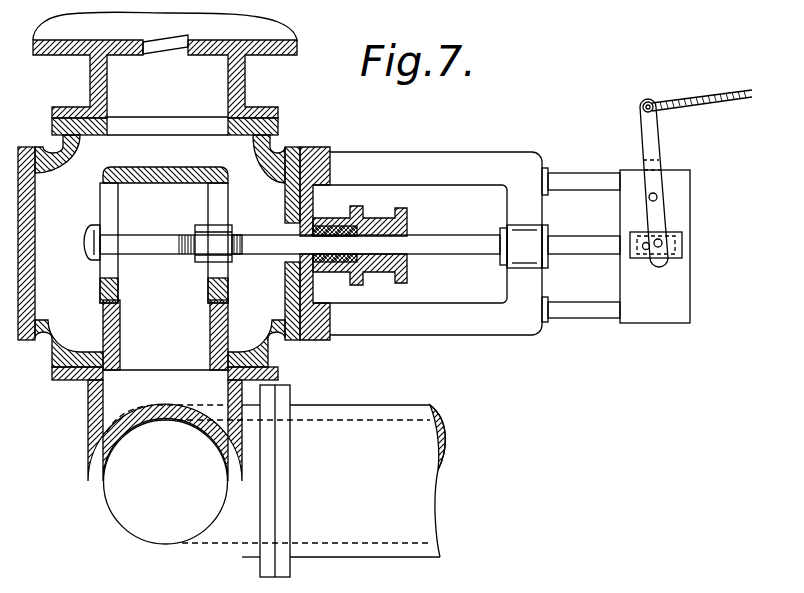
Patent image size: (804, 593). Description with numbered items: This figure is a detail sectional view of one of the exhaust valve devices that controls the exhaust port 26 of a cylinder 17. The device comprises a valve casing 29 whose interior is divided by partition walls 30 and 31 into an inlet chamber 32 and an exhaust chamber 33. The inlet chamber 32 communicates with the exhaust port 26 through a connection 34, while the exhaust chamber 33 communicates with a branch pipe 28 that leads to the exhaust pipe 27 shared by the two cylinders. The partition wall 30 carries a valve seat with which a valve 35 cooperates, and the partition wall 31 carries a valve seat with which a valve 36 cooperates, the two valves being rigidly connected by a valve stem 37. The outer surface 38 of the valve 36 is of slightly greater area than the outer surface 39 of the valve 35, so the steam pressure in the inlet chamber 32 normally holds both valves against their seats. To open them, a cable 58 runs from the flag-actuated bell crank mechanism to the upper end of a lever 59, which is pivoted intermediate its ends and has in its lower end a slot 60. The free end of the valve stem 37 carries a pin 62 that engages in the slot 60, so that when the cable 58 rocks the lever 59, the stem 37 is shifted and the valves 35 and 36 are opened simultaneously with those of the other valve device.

The cylinder 17 is at (165, 65).
The exhaust port 26 is at (176, 46).
The exhaust pipe 27 is at (275, 481).
The branch pipe 28 is at (100, 432).
The valve casing 29 is at (276, 150).
The partition wall 30 is at (217, 317).
The partition wall 31 is at (121, 318).
The inlet chamber 32 is at (159, 251).
The exhaust chamber 33 is at (165, 195).
The connection 34 is at (246, 78).
The valve 35 is at (218, 266).
The valve 36 is at (110, 240).
The valve stem 37 is at (172, 250).
The outer surface 38 is at (100, 211).
The outer surface 39 is at (228, 211).
The cable 58 is at (710, 88).
The lever 59 is at (643, 133).
The slot 60 is at (662, 235).
The pin 62 is at (684, 246).